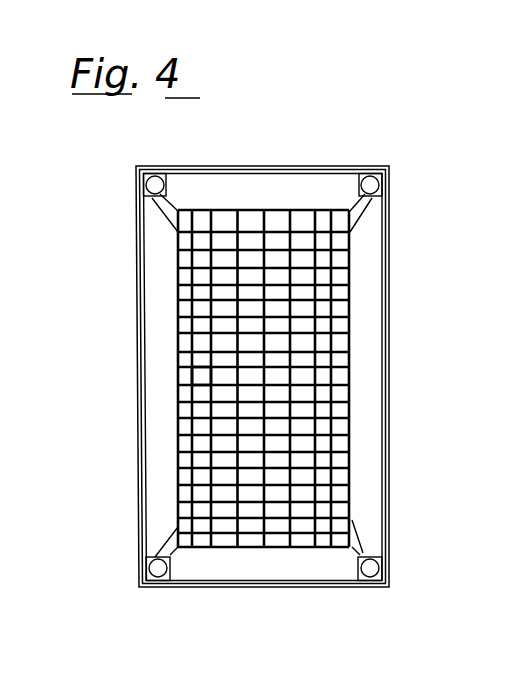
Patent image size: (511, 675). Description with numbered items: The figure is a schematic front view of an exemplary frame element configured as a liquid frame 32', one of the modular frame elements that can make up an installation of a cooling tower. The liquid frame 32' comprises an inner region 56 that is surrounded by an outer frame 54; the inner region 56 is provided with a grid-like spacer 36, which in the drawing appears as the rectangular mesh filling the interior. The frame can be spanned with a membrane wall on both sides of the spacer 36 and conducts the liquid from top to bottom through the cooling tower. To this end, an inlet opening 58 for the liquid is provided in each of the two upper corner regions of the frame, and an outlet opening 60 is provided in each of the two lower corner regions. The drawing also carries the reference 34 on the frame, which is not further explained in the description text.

The liquid frame 32' is at (248, 362).
The frame 34 is at (137, 272).
The spacer 36 is at (342, 311).
The outer frame 54 is at (282, 188).
The inner region 56 is at (203, 377).
The inlet opening 58 is at (150, 184).
The outlet opening 60 is at (157, 568).